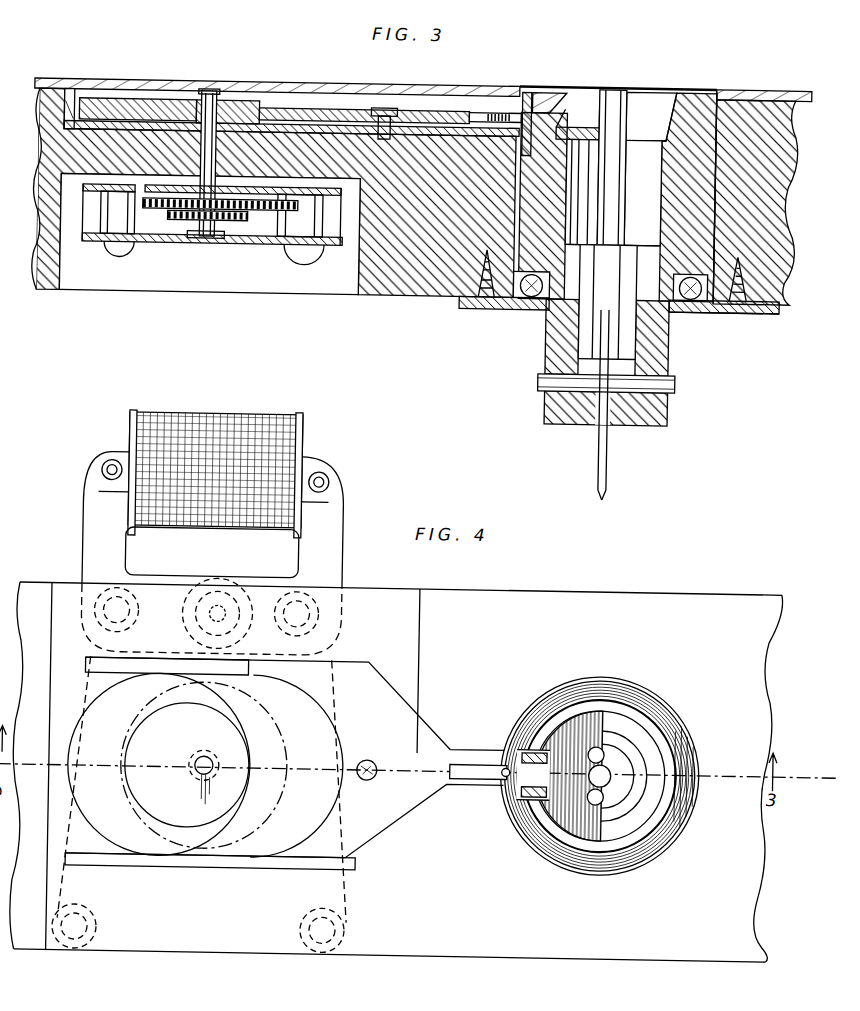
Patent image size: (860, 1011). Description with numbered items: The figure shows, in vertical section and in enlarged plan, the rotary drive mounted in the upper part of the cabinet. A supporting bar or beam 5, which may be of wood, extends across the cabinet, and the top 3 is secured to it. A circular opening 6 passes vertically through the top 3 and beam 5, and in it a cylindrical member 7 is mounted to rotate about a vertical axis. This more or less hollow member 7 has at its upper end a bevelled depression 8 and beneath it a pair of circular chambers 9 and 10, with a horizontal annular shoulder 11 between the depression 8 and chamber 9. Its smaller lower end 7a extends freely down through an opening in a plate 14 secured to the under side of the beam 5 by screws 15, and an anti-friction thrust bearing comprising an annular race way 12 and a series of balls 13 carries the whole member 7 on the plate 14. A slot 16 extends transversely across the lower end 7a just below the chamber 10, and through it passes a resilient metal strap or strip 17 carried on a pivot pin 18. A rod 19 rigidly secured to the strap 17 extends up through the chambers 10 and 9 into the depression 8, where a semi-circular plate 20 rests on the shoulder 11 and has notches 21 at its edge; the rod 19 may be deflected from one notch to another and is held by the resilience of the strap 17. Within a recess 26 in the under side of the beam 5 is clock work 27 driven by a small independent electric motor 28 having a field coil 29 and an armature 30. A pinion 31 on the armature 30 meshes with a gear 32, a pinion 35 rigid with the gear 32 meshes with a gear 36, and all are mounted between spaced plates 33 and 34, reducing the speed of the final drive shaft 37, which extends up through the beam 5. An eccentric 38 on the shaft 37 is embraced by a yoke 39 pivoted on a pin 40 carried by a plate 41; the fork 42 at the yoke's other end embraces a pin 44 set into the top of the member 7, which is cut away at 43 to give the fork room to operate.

In FIG. 3, the top 3 is at (452, 78).
In FIG. 3, the supporting bar or beam 5 is at (410, 272).
In FIG. 4, the supporting bar or beam 5 is at (548, 945).
In FIG. 3, the circular opening 6 is at (733, 141).
In FIG. 3, the cylindrical member 7 is at (717, 80).
In FIG. 4, the cylindrical member 7 is at (548, 690).
In FIG. 3, the lower end of the member 7a is at (560, 336).
In FIG. 3, the bevelled depression 8 is at (690, 96).
In FIG. 4, the bevelled depression 8 is at (648, 700).
In FIG. 3, the circular chamber 9 is at (662, 178).
In FIG. 4, the circular chamber 9 is at (638, 798).
In FIG. 3, the circular chamber 10 is at (631, 338).
In FIG. 4, the circular chamber 10 is at (613, 763).
In FIG. 3, the horizontal annular shoulder 11 is at (672, 112).
In FIG. 4, the horizontal annular shoulder 11 is at (615, 834).
In FIG. 3, the annular race way 12 is at (672, 248).
In FIG. 3, the balls 13 is at (530, 300).
In FIG. 3, the plate 14 is at (712, 303).
In FIG. 3, the screws 15 is at (481, 296).
In FIG. 3, the slot 16 is at (614, 418).
In FIG. 3, the metal strap or strip 17 is at (603, 445).
In FIG. 3, the pivot pin 18 is at (682, 372).
In FIG. 3, the rod 19 is at (614, 180).
In FIG. 4, the rod 19 is at (597, 773).
In FIG. 3, the semi-circular plate 20 is at (596, 125).
In FIG. 4, the semi-circular plate 20 is at (572, 812).
In FIG. 4, the notches 21 is at (605, 742).
In FIG. 3, the recess 26 is at (121, 289).
In FIG. 3, the clock work 27 is at (263, 253).
In FIG. 4, the electric motor 28 is at (70, 509).
In FIG. 4, the field coil 29 is at (218, 413).
In FIG. 4, the armature 30 is at (215, 583).
In FIG. 4, the pinion 31 is at (186, 622).
In FIG. 3, the gear 32 is at (180, 220).
In FIG. 4, the gear 32 is at (262, 708).
In FIG. 3, the plate 33 is at (98, 190).
In FIG. 3, the plate 34 is at (92, 240).
In FIG. 4, the pinion 35 is at (226, 620).
In FIG. 3, the gear 36 is at (325, 209).
In FIG. 4, the gear 36 is at (282, 740).
In FIG. 3, the final drive shaft 37 is at (210, 100).
In FIG. 4, the final drive shaft 37 is at (193, 750).
In FIG. 3, the eccentric 38 is at (113, 100).
In FIG. 4, the eccentric 38 is at (230, 805).
In FIG. 3, the yoke 39 is at (312, 105).
In FIG. 4, the yoke 39 is at (378, 690).
In FIG. 3, the pin 40 is at (386, 102).
In FIG. 4, the pin 40 is at (378, 756).
In FIG. 3, the plate 41 is at (70, 88).
In FIG. 4, the plate 41 is at (393, 596).
In FIG. 3, the fork 42 is at (492, 105).
In FIG. 4, the fork 42 is at (478, 756).
In FIG. 3, the cut away 43 is at (557, 92).
In FIG. 4, the cut away 43 is at (530, 790).
In FIG. 3, the pin 44 is at (529, 86).
In FIG. 4, the pin 44 is at (507, 770).